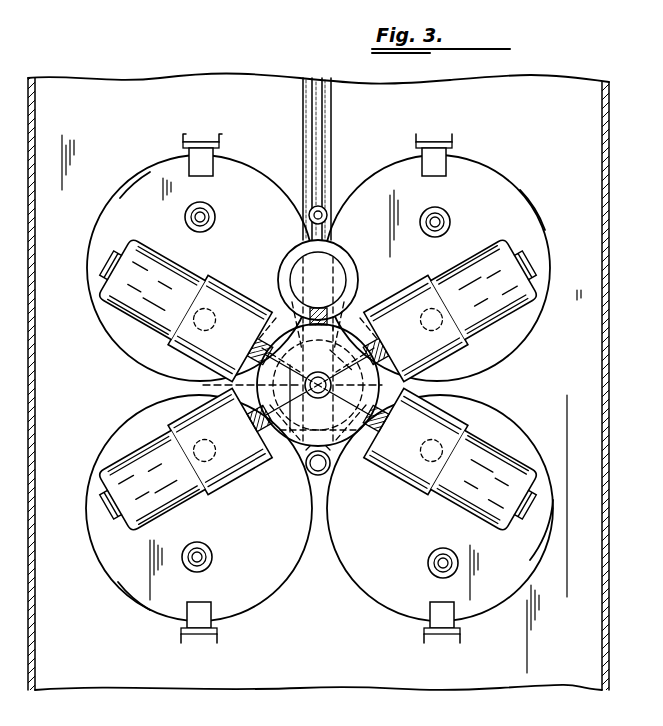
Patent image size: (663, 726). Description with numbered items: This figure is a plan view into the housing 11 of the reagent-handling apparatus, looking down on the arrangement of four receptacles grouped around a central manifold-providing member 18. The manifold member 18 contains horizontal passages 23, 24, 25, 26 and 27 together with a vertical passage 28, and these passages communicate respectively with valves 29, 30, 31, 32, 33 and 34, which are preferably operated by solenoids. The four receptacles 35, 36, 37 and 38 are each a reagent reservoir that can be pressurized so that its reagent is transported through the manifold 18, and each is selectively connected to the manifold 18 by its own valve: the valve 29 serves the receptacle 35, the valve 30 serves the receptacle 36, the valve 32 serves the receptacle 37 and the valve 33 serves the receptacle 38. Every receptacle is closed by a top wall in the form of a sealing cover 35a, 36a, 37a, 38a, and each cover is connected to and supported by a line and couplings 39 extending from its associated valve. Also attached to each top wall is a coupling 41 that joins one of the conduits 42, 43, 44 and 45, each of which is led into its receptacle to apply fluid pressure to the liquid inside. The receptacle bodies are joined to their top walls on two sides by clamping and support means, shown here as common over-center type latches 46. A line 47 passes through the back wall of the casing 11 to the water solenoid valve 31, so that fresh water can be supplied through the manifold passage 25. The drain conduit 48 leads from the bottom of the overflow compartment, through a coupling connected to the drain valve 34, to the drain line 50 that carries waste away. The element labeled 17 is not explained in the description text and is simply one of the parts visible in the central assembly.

The housing 11 is at (612, 222).
The hub arm 17 is at (374, 360).
The manifold-providing member 18 is at (343, 433).
The horizontal passage 23 is at (318, 446).
The horizontal passage 24 is at (274, 318).
The horizontal passage 25 is at (318, 293).
The horizontal passage 26 is at (359, 322).
The horizontal passage 27 is at (390, 422).
The vertical passage 28 is at (257, 414).
The valve 29 is at (226, 482).
The valve 30 is at (219, 275).
The water solenoid valve 31 is at (338, 262).
The valve 32 is at (417, 285).
The valve 33 is at (427, 478).
The drain valve 34 is at (212, 388).
The receptacle 35 is at (268, 606).
The cover 35a is at (138, 592).
The receptacle 36 is at (250, 172).
The cover 36a is at (133, 190).
The receptacle 37 is at (520, 192).
The cover 37a is at (541, 240).
The receptacle 38 is at (527, 428).
The cover 38a is at (543, 477).
The line and couplings 39 is at (447, 351).
The coupling 41 is at (185, 218).
The conduit 42 is at (207, 214).
The conduit 43 is at (212, 556).
The conduit 44 is at (444, 220).
The conduit 45 is at (428, 563).
The over-center latch 46 is at (434, 160).
The line 47 is at (328, 235).
The drain conduit 48 is at (312, 478).
The drain line 50 is at (303, 104).